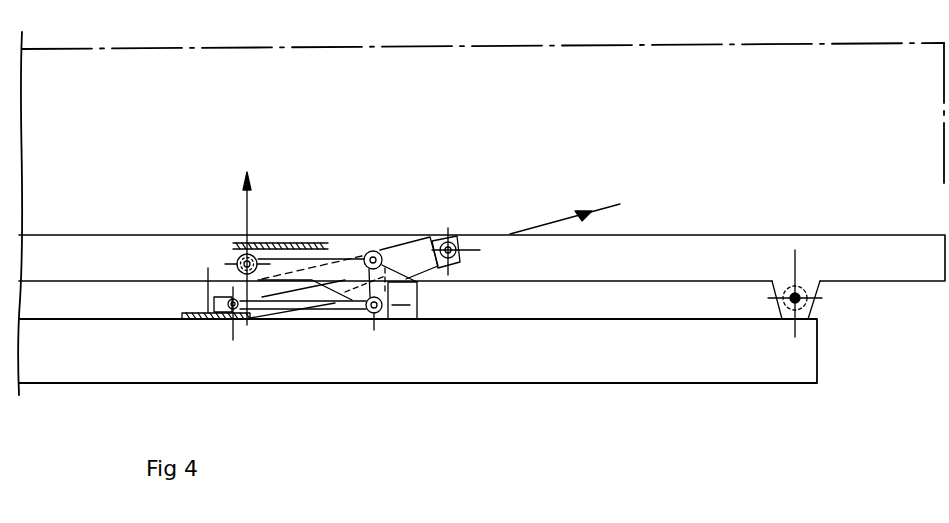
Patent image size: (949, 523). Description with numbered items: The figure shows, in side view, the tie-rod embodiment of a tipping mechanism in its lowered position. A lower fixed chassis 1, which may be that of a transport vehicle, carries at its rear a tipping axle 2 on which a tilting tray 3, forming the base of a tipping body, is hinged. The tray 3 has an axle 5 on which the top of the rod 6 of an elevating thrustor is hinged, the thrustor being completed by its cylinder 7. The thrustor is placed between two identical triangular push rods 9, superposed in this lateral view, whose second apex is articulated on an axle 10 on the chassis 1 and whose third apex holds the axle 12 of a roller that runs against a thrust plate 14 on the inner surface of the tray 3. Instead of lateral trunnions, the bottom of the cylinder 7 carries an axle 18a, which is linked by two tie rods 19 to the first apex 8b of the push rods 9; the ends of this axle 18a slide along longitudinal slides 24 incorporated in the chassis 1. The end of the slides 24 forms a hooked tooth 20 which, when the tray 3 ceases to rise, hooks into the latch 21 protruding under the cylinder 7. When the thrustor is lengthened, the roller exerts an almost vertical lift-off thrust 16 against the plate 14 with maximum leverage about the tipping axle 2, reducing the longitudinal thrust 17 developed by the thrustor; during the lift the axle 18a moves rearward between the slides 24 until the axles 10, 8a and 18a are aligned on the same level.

The lower fixed chassis 1 is at (513, 362).
The tipping axle 2 is at (806, 300).
The tilting tray 3 is at (538, 266).
The axle 5 is at (451, 242).
The rod 6 is at (456, 262).
The cylinder 7 is at (411, 258).
The axle 8a is at (372, 313).
The first apex 8b is at (380, 312).
The triangular push rods 9 is at (338, 254).
The axle 10 is at (369, 250).
The axle 12 is at (243, 255).
The thrust plate 14 is at (286, 243).
The lift-off thrust 16 is at (243, 220).
The longitudinal thrust 17 is at (556, 224).
The axle 18a is at (228, 318).
The tie rods 19 is at (331, 310).
The hooked tooth 20 is at (182, 316).
The latch 21 is at (208, 268).
The longitudinal slides 24 is at (245, 319).